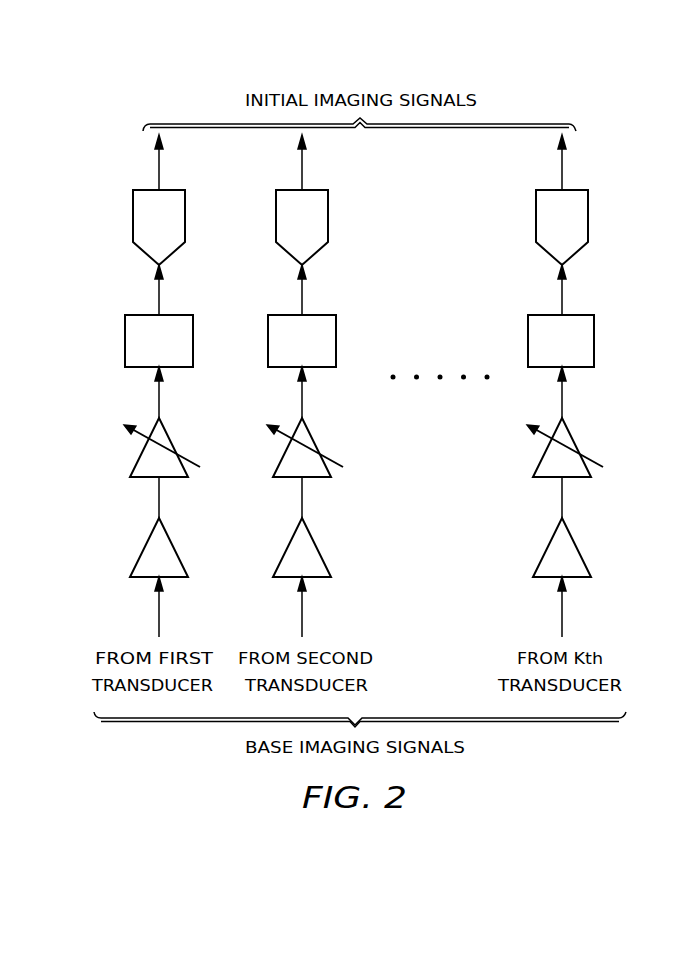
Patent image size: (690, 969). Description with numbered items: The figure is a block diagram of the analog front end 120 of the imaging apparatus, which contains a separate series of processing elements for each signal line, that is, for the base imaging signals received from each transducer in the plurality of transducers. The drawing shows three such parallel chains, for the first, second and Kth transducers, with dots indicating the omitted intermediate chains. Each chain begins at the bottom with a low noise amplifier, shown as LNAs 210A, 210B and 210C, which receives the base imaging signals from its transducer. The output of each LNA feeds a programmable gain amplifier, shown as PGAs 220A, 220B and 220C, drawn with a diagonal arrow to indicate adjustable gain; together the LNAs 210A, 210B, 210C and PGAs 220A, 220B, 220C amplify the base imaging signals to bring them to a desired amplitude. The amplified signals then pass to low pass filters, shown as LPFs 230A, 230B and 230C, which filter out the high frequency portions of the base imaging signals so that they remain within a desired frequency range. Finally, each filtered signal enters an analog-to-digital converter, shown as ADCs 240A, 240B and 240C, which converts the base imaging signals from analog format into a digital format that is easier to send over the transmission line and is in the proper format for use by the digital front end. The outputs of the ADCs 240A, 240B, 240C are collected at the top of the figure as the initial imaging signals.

The analog front end 120 is at (161, 76).
The low noise amplifier (LNA) 210A is at (140, 556).
The low noise amplifier (LNA) 210B is at (321, 556).
The low noise amplifier (LNA) 210C is at (581, 558).
The programmable amplifier (PGA) 220A is at (138, 461).
The programmable amplifier (PGA) 220B is at (314, 442).
The programmable amplifier (PGA) 220C is at (575, 442).
The low pass filter (LPF) 230A is at (125, 340).
The low pass filter (LPF) 230B is at (336, 340).
The low pass filter (LPF) 230C is at (594, 340).
The analog-to-digital converter (ADC) 240A is at (133, 215).
The analog-to-digital converter (ADC) 240B is at (328, 215).
The analog-to-digital converter (ADC) 240C is at (588, 215).